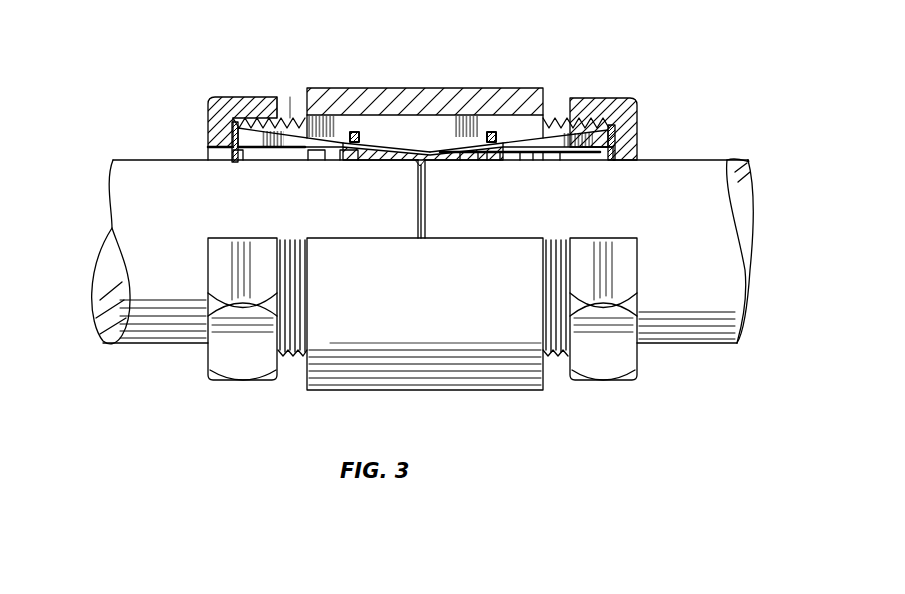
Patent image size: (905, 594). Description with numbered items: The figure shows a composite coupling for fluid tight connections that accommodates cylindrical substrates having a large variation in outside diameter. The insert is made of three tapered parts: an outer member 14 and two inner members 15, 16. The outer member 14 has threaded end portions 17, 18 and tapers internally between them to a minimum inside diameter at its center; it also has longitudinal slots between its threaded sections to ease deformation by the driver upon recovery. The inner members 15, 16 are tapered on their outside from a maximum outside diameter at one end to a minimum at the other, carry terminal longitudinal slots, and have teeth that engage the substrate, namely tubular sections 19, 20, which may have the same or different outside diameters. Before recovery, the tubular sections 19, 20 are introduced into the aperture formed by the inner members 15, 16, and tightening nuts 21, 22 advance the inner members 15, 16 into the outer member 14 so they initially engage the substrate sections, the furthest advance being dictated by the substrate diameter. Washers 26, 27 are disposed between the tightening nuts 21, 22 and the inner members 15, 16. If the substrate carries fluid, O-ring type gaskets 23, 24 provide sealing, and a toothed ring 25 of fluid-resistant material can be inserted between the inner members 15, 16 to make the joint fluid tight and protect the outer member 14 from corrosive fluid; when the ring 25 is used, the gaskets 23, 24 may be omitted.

The outer member 14 is at (289, 92).
The inner member 15 is at (600, 150).
The inner member 16 is at (233, 160).
The threaded end portion 17 is at (287, 92).
The threaded end portion 18 is at (545, 122).
The tubular section 19 is at (113, 232).
The tubular section 20 is at (755, 262).
The tightening nut 21 is at (620, 104).
The tightening nut 22 is at (207, 102).
The O-ring type gasket 23 is at (357, 88).
The O-ring type gasket 24 is at (495, 131).
The toothed ring 25 is at (430, 150).
The washer 26 is at (232, 127).
The washer 27 is at (617, 131).